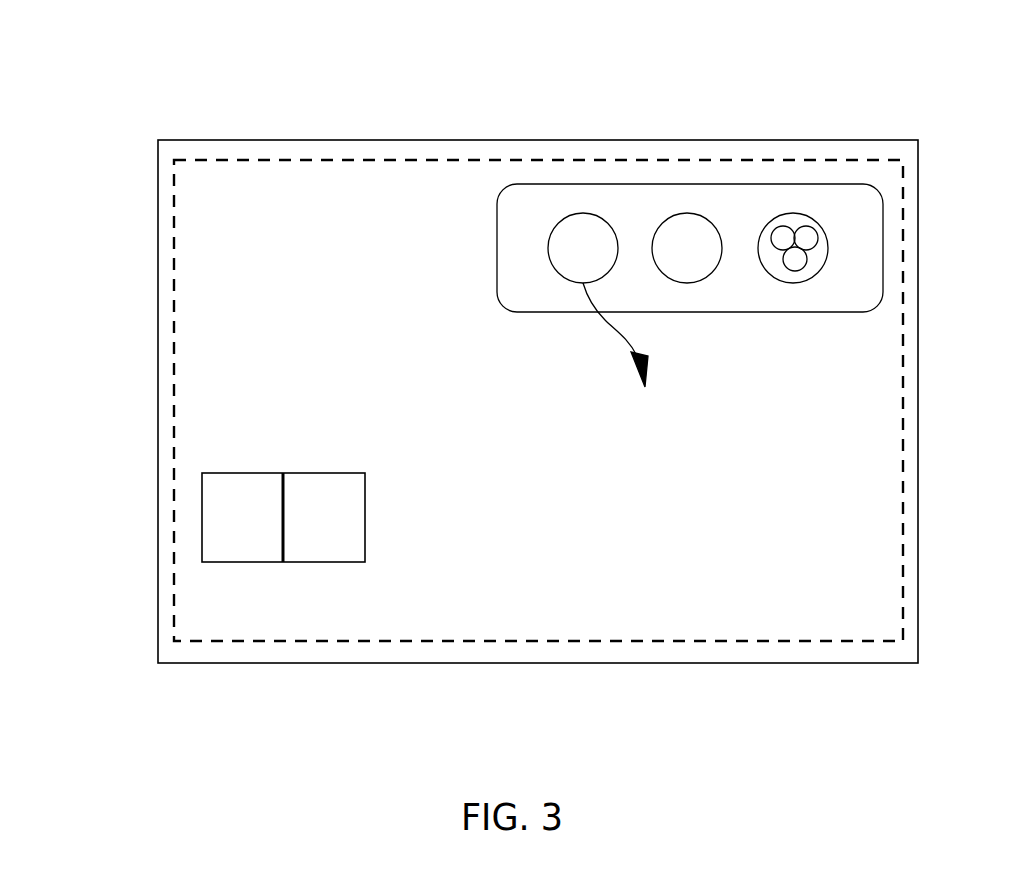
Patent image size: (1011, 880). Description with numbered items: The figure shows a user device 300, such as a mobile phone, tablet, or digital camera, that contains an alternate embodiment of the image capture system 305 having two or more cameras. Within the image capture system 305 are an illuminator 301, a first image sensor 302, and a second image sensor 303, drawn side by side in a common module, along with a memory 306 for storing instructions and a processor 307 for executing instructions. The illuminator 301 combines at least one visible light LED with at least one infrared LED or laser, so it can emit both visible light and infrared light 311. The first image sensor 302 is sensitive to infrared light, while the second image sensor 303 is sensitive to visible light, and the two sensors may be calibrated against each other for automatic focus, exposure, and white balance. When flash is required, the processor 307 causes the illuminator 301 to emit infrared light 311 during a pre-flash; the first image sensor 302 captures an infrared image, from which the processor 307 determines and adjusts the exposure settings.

The user device 300 is at (142, 118).
The illuminator 301 is at (583, 213).
The first image sensor 302 is at (687, 213).
The second image sensor 303 is at (793, 213).
The image capture system 305 is at (158, 305).
The memory 306 is at (202, 522).
The processor 307 is at (318, 562).
The infrared light 311 is at (647, 367).